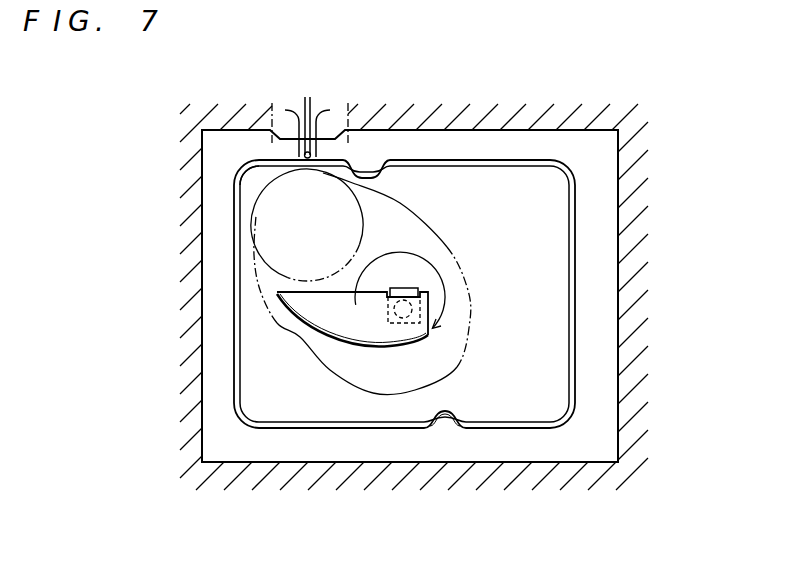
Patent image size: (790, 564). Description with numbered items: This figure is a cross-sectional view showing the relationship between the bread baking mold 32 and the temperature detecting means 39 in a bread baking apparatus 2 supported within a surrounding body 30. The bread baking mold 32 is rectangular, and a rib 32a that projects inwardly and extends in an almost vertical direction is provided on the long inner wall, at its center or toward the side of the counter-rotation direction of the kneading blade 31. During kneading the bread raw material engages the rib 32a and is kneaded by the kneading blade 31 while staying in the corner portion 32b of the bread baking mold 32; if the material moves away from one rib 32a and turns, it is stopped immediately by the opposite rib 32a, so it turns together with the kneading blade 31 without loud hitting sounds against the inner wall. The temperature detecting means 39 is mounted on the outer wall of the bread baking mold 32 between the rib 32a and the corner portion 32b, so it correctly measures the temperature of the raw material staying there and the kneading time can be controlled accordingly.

The device housing notch 2 is at (452, 416).
The housing body 30 is at (630, 201).
The kneading blade 31 is at (332, 322).
The bread baking mold 32 is at (576, 278).
The rib 32a is at (386, 164).
The corner portion 32b is at (258, 179).
The temperature detecting means 39 is at (306, 156).